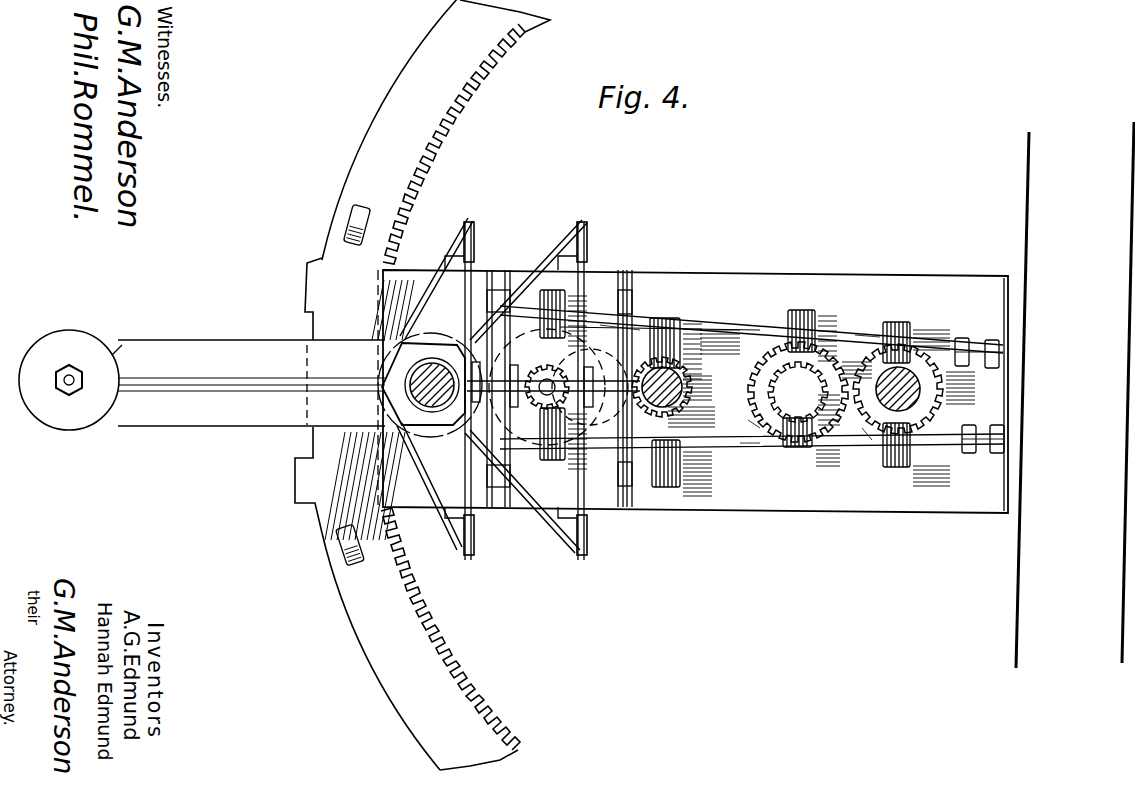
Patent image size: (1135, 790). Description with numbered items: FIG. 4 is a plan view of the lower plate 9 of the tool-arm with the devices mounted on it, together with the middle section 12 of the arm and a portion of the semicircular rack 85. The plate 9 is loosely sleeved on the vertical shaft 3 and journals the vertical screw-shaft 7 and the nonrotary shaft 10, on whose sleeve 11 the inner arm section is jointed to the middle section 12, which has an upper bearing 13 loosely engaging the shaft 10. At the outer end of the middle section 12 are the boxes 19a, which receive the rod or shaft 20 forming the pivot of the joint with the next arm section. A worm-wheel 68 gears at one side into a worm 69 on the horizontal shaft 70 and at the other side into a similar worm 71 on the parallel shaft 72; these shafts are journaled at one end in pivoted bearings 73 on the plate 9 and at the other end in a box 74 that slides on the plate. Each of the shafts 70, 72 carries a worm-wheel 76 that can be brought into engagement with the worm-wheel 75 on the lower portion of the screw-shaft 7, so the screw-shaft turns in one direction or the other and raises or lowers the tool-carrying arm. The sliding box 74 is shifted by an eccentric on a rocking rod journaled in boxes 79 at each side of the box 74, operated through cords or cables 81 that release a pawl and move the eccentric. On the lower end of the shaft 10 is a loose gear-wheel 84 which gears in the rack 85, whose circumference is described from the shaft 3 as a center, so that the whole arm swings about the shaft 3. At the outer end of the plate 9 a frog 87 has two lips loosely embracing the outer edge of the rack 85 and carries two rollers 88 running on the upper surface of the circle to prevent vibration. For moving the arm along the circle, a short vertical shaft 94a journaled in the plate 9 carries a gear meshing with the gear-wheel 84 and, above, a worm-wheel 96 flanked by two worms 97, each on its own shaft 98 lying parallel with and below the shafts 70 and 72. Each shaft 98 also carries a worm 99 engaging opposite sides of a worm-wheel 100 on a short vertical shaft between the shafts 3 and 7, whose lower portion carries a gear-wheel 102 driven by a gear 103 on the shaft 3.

The vertical shaft 3 is at (944, 400).
The screw-shaft 7 is at (690, 387).
The lower plate 9 is at (774, 274).
The third shaft 10 is at (410, 376).
The sleeve 11 is at (395, 401).
The middle section 12 is at (251, 383).
The upper bearing 13 is at (416, 470).
The upper and lower boxes 19a is at (116, 352).
The rod or shaft 20 is at (74, 373).
The worm-wheel 68 is at (946, 381).
The worm 69 is at (889, 470).
The horizontal shaft 70 is at (749, 466).
The worm 71 is at (912, 340).
The shaft 72 is at (729, 329).
The pivoted bearings 73 is at (991, 340).
The sliding box 74 is at (512, 356).
The worm-wheel 75 is at (690, 402).
The worm-wheel 76 is at (667, 319).
The boxes 79 is at (624, 330).
The cords or cables 81 is at (452, 260).
The loose gear-wheel 84 is at (441, 332).
The semicircular rack 85 is at (430, 156).
The frog 87 is at (305, 284).
The rollers 88 is at (345, 223).
The short vertical shaft 94a is at (600, 374).
The worm-wheel 96 is at (549, 382).
The worms 97 is at (566, 298).
The shafts 98 is at (864, 336).
The worm 99 is at (808, 316).
The worm-wheel 100 is at (798, 392).
The gear-wheel 102 is at (752, 420).
The gear 103 is at (871, 430).